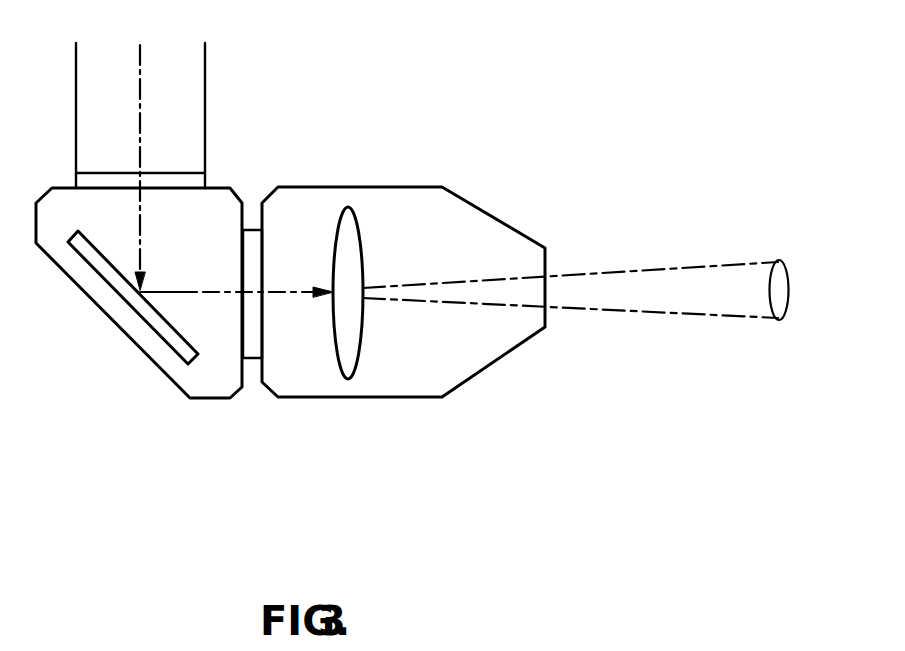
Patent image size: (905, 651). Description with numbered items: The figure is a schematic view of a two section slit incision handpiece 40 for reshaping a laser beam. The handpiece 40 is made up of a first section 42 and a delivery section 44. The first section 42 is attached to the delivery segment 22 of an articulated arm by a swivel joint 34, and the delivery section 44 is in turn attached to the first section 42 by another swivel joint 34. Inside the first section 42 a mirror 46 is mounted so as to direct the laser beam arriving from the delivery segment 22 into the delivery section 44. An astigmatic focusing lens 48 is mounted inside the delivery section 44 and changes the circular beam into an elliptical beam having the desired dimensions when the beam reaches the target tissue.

The delivery segment 22 is at (207, 118).
The swivel joint 34 is at (200, 178).
The slit incision handpiece 40 is at (290, 331).
The first section 42 is at (208, 398).
The delivery section 44 is at (417, 397).
The mirror 46 is at (130, 312).
The astigmatic focusing lens 48 is at (362, 258).